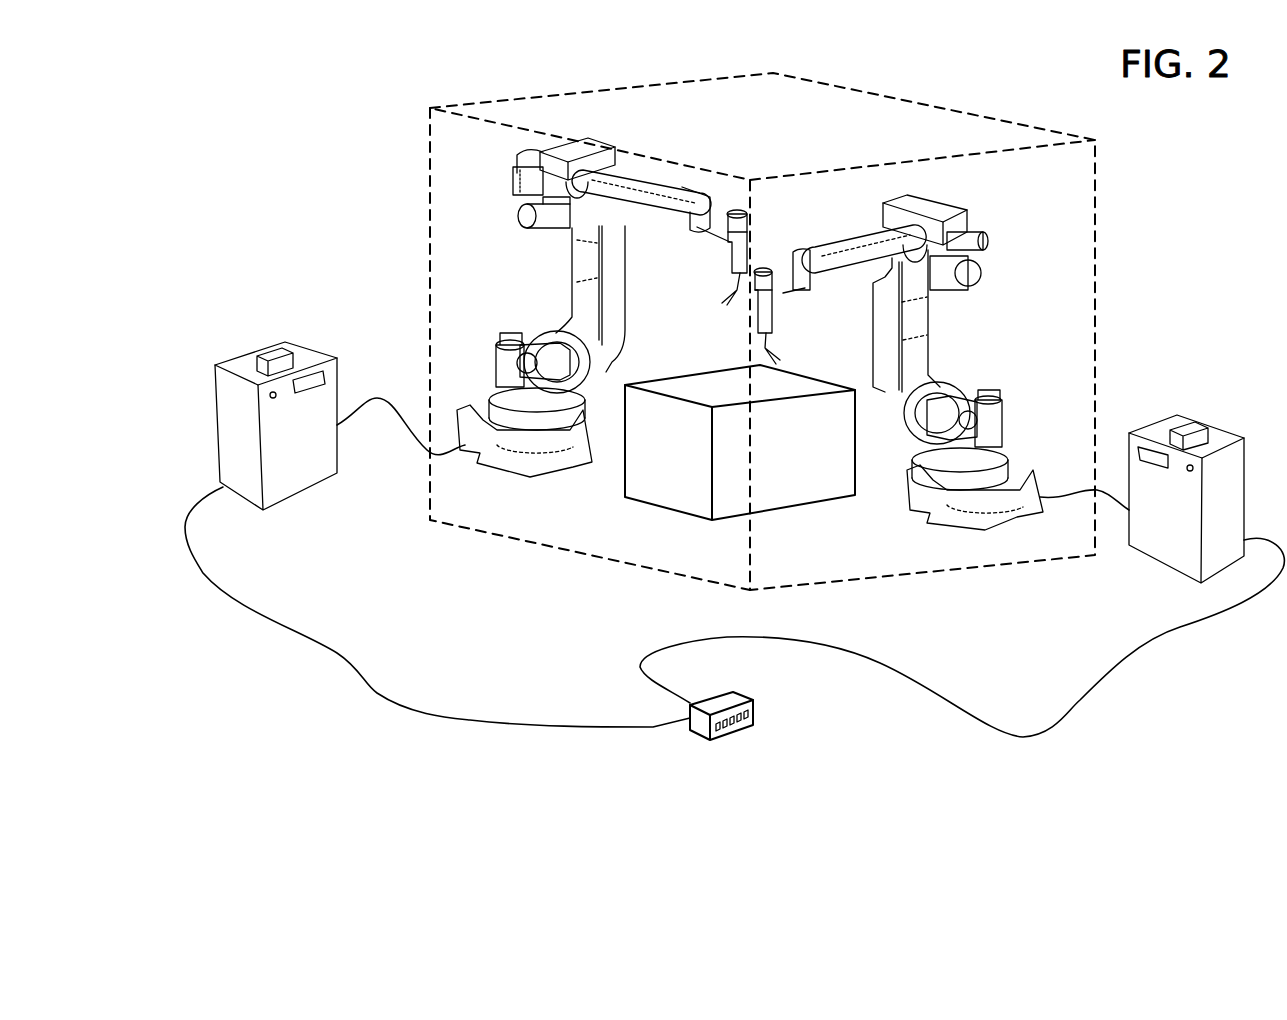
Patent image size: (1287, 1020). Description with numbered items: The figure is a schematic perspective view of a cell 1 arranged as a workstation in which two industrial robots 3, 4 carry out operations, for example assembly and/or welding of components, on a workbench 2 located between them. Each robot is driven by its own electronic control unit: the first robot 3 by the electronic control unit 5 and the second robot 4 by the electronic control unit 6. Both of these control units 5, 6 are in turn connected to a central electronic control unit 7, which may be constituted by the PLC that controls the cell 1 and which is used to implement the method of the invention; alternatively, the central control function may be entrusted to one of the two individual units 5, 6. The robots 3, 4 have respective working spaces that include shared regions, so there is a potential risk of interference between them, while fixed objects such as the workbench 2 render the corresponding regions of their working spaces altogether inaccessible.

The cell 1 is at (428, 157).
The workbench 2 is at (686, 374).
The robot 3 is at (545, 220).
The robot 4 is at (987, 241).
The electronic control unit 5 is at (238, 360).
The electronic control unit 6 is at (1225, 432).
The central electronic control unit 7 is at (755, 707).